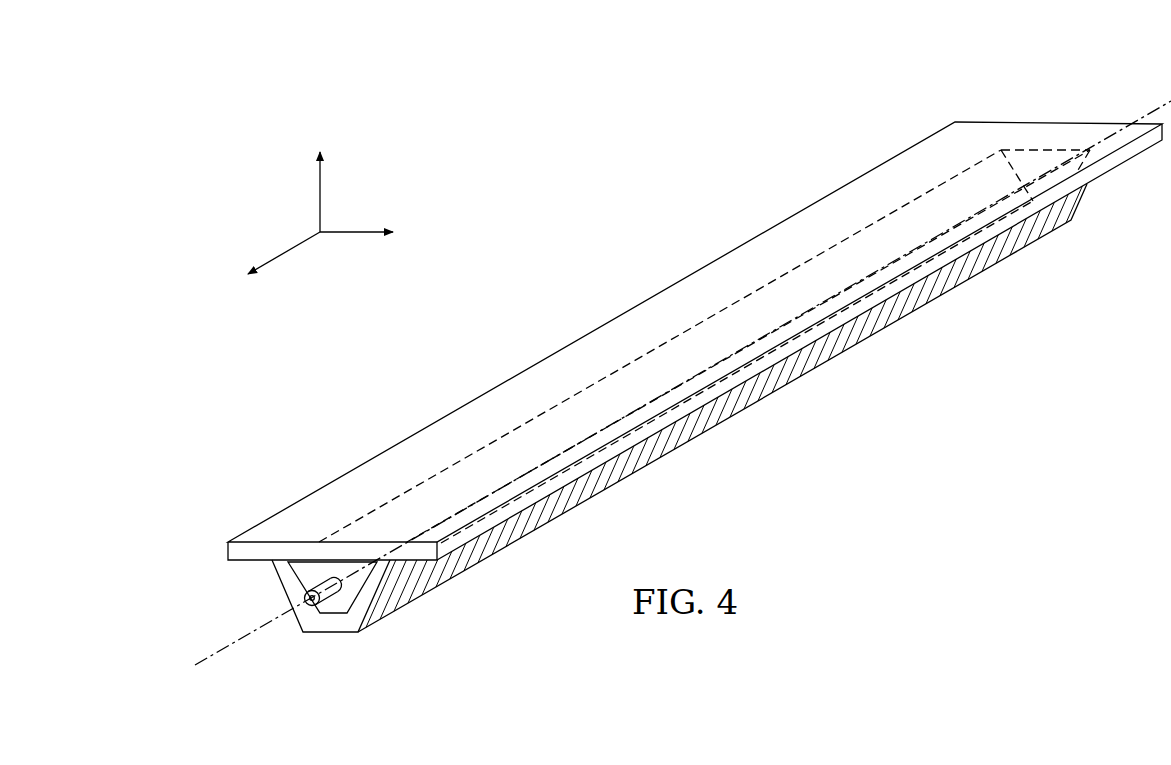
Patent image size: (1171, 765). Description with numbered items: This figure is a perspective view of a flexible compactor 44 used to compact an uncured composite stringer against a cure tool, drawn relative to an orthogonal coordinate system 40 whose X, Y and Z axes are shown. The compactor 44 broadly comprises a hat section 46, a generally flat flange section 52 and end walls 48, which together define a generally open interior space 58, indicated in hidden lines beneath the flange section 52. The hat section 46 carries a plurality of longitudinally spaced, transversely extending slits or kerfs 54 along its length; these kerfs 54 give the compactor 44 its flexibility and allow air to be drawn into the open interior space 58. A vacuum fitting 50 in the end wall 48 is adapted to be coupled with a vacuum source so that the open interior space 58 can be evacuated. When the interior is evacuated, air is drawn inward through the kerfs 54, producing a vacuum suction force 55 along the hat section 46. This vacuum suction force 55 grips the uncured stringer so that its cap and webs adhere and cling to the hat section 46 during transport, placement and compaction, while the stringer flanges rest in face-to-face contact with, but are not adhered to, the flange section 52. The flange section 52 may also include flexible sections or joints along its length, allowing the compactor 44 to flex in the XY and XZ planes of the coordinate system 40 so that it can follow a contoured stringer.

The orthogonal coordinate system 40 is at (291, 207).
The compactor 44 is at (606, 229).
The hat section 46 is at (411, 603).
The end walls 48 is at (308, 573).
The vacuum fittings 50 is at (313, 606).
The flange section 52 is at (1060, 134).
The kerfs 54 is at (578, 487).
The vacuum suction force 55 is at (1076, 207).
The open interior space 58 is at (712, 343).